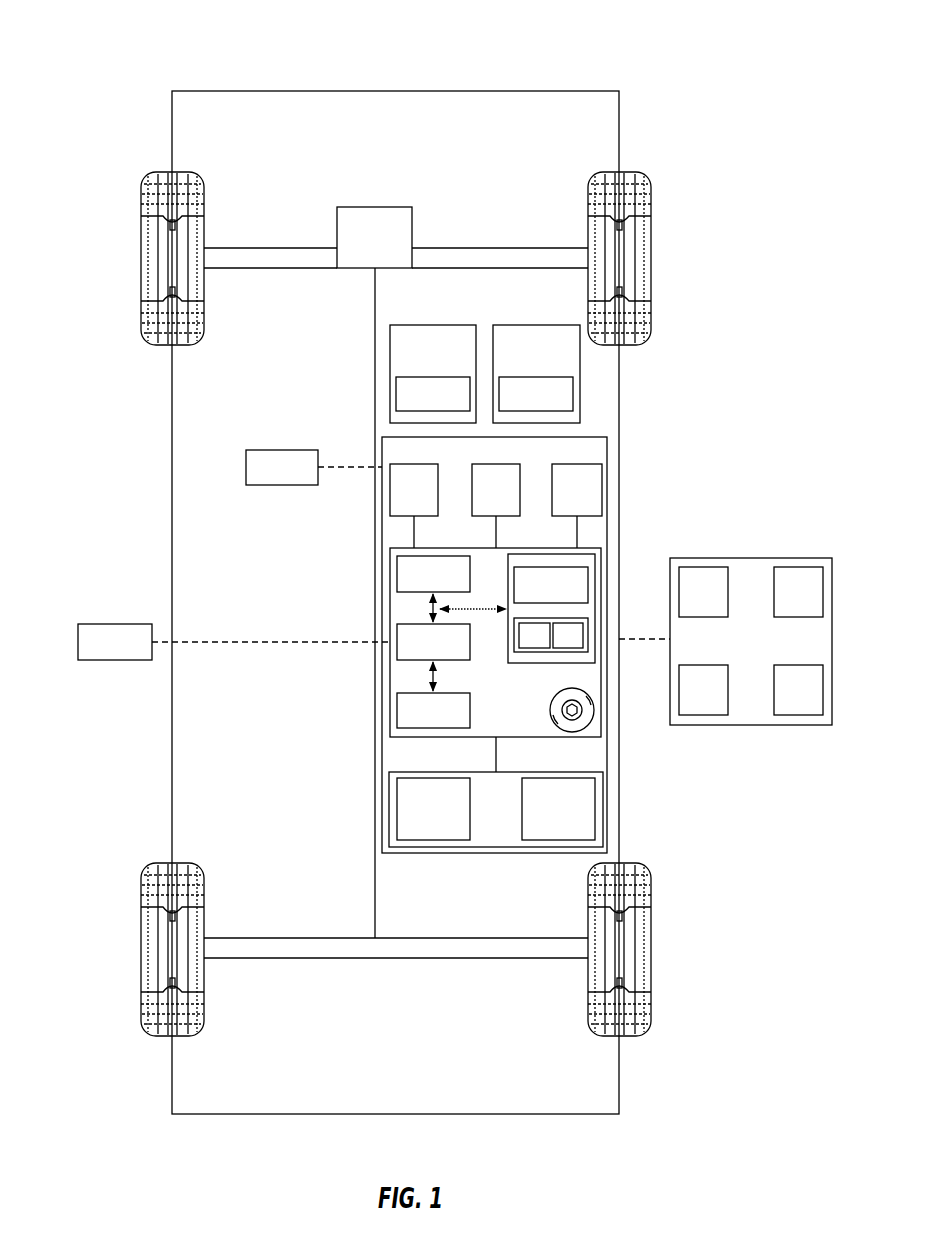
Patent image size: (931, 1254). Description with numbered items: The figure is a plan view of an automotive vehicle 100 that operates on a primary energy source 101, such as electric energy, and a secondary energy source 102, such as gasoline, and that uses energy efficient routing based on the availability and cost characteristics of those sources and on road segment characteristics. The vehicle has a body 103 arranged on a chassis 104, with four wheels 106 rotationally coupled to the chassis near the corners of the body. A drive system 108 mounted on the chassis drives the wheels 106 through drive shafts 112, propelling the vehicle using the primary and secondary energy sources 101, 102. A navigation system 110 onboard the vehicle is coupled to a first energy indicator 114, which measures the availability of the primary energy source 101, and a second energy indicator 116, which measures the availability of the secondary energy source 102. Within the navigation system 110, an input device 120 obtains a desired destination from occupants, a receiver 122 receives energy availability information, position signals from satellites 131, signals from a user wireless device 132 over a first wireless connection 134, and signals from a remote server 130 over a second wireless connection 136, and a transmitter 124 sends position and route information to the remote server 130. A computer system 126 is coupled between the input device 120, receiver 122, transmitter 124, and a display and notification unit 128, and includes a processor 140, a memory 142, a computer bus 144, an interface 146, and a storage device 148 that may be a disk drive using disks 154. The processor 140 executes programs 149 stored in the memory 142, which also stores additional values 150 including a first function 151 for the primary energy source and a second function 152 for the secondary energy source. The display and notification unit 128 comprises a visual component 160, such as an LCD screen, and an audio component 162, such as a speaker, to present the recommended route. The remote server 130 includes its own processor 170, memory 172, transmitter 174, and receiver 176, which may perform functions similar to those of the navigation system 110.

The automotive vehicle 100 is at (131, 42).
The primary energy source 101 is at (415, 404).
The secondary energy source 102 is at (518, 404).
The body 103 is at (172, 568).
The chassis 104 is at (363, 719).
The wheels 106 is at (141, 258).
The drive system 108 is at (357, 249).
The navigation system 110 is at (385, 447).
The drive shafts 112 is at (255, 248).
The first energy indicator 114 is at (415, 364).
The second energy indicator 116 is at (518, 364).
The input device 120 is at (396, 501).
The receiver 122 is at (478, 501).
The transmitter 124 is at (559, 501).
The computer system 126 is at (390, 553).
The display and notification unit 128 is at (585, 773).
The remote server 130 is at (735, 558).
The satellites 131 is at (97, 653).
The user wireless device 132 is at (264, 478).
The first wireless connection 134 is at (345, 471).
The second wireless connection 136 is at (631, 636).
The processor 140 is at (415, 585).
The memory 142 is at (580, 563).
The computer bus 144 is at (430, 609).
The interface 146 is at (415, 653).
The storage device 148 is at (415, 721).
The programs 149 is at (533, 596).
The additional values 150 is at (590, 640).
The first function 151 is at (525, 650).
The second function 152 is at (558, 650).
The disks 154 is at (596, 712).
The visual component 160 is at (415, 819).
The audio component 162 is at (540, 819).
The processor 170 is at (685, 602).
The memory 172 is at (780, 602).
The transmitter 174 is at (685, 700).
The receiver 176 is at (780, 700).